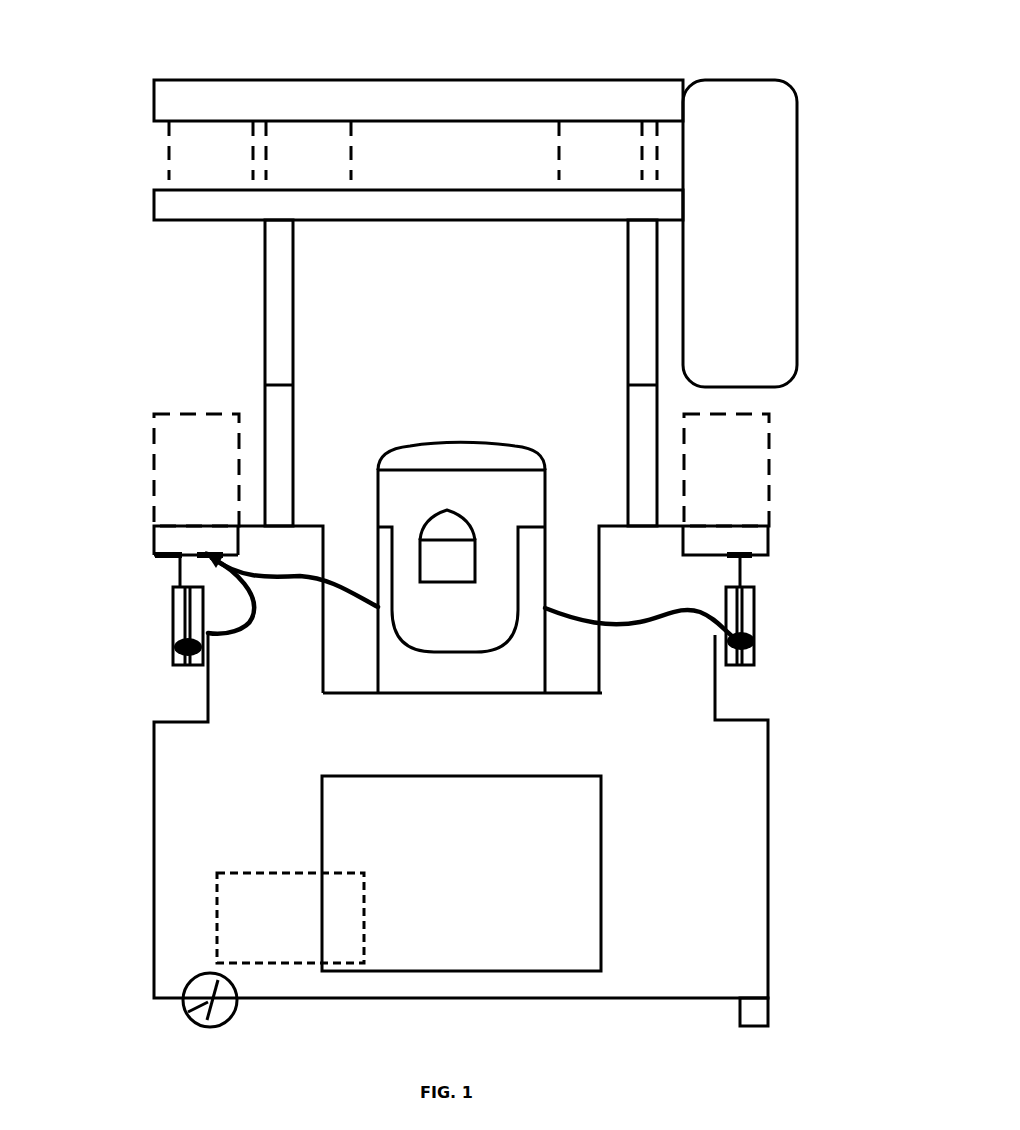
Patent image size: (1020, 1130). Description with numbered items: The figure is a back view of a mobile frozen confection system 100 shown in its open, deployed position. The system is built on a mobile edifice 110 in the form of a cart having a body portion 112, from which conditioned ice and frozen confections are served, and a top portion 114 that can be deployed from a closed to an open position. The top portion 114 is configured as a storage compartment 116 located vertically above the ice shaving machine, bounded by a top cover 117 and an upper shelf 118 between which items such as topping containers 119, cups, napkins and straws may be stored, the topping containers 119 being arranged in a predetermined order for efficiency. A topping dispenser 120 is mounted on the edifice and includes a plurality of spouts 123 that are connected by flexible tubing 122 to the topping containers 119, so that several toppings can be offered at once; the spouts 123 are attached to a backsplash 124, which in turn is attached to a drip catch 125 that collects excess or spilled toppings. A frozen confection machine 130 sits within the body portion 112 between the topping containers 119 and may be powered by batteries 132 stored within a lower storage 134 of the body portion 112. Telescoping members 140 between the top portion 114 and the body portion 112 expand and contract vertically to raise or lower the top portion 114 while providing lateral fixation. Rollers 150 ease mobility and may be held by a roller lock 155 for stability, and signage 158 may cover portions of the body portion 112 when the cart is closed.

The mobile frozen confection system 100 is at (265, 65).
The mobile edifice 110 is at (135, 390).
The body portion 112 is at (177, 837).
The top portion 114 is at (138, 172).
The storage compartment 116 is at (502, 148).
The top cover 117 is at (400, 107).
The upper shelf 118 is at (228, 212).
The topping containers 119 is at (461, 324).
The topping dispenser 120 is at (118, 480).
The tubing 122 is at (240, 578).
The spouts 123 is at (175, 642).
The backsplash 124 is at (195, 690).
The drip catch 125 is at (172, 714).
The frozen confection machine 130 is at (520, 672).
The batteries 132 is at (240, 906).
The lower storage 134 is at (499, 918).
The telescoping members 140 is at (283, 346).
The rollers 150 is at (235, 1015).
The roller lock 155 is at (188, 1012).
The signage 158 is at (735, 105).